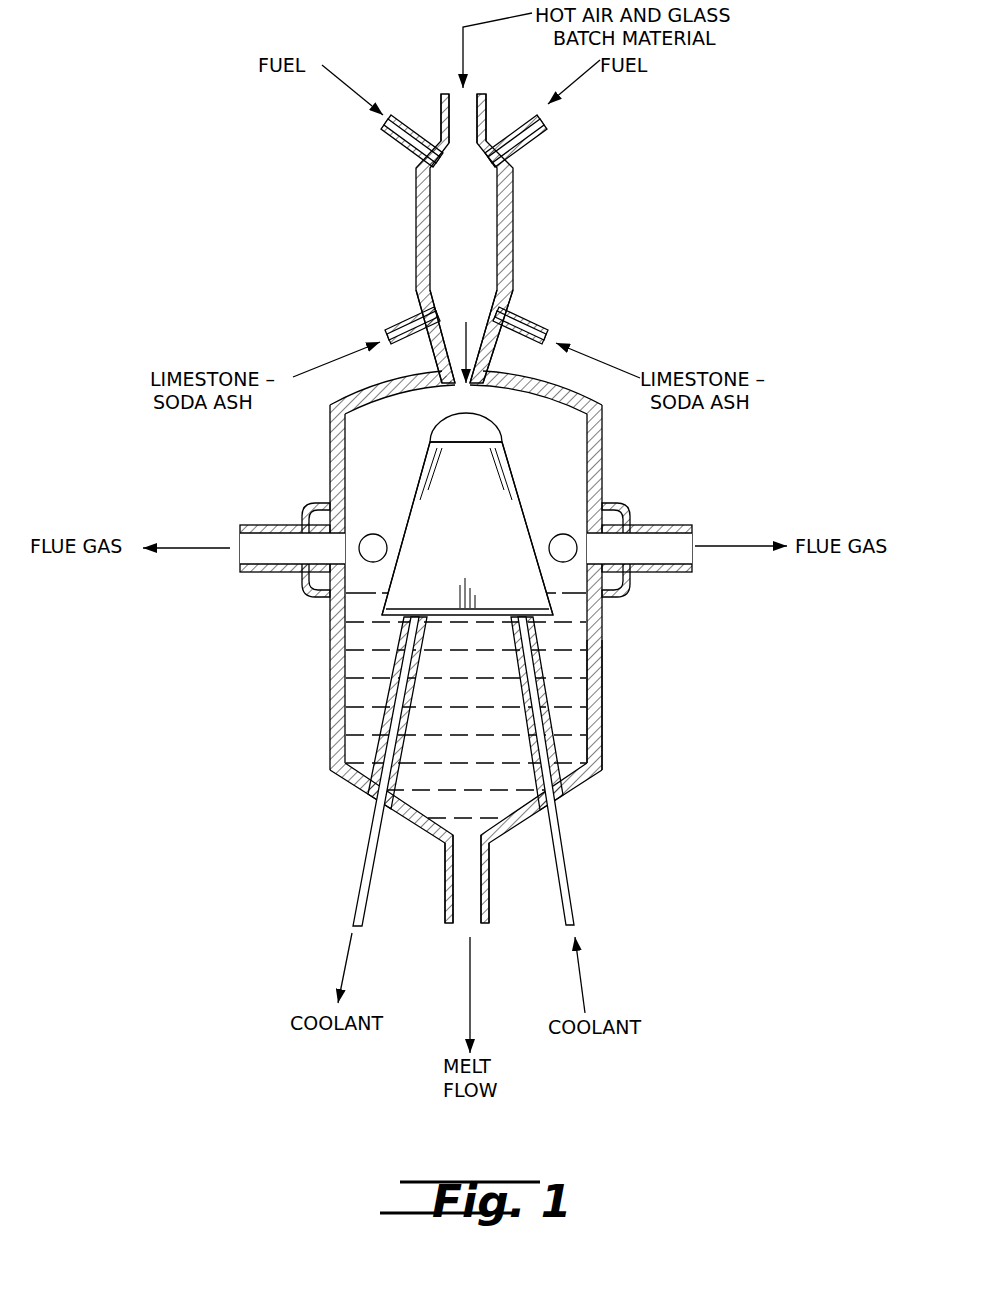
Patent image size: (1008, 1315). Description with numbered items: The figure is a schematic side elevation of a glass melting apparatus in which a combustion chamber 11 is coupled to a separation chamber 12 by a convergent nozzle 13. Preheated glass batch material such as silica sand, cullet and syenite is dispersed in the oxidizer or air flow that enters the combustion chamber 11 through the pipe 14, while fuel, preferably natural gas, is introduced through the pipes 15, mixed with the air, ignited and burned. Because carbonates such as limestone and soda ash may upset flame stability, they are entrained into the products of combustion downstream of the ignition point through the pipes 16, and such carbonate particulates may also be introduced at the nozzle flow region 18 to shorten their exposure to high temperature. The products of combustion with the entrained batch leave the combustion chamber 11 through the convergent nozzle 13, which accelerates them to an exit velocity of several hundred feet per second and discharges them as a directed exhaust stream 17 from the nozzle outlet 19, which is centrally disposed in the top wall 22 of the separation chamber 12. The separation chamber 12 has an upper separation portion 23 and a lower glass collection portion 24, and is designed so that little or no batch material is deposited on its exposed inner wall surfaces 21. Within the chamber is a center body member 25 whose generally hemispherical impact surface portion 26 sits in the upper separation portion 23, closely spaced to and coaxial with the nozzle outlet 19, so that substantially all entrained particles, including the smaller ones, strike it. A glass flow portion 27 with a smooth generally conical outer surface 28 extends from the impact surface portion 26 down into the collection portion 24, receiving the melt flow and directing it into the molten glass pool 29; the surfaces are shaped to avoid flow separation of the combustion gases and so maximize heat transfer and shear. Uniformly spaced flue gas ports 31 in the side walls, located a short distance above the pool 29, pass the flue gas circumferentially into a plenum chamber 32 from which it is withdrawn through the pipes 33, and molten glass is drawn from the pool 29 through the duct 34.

The combustion chamber 11 is at (507, 240).
The separation chamber 12 is at (544, 645).
The convergent nozzle 13 is at (503, 345).
The pipe 14 is at (487, 100).
The pipes 15 is at (393, 142).
The pipes 16 is at (402, 322).
The exhaust stream 17 is at (450, 400).
The nozzle flow region 18 is at (460, 307).
The nozzle outlet 19 is at (478, 385).
The inner wall surfaces 21 is at (347, 462).
The top wall 22 is at (358, 378).
The upper separation portion 23 is at (556, 450).
The lower glass collection portion 24 is at (476, 730).
The center body member 25 is at (511, 647).
The impact surface portion 26 is at (432, 430).
The glass flow portion 27 is at (413, 508).
The conical outer surface 28 is at (528, 455).
The molten glass pool 29 is at (583, 663).
The flue gas ports 31 is at (373, 549).
The plenum chamber 32 is at (312, 585).
The pipes 33 is at (272, 525).
The duct 34 is at (490, 878).